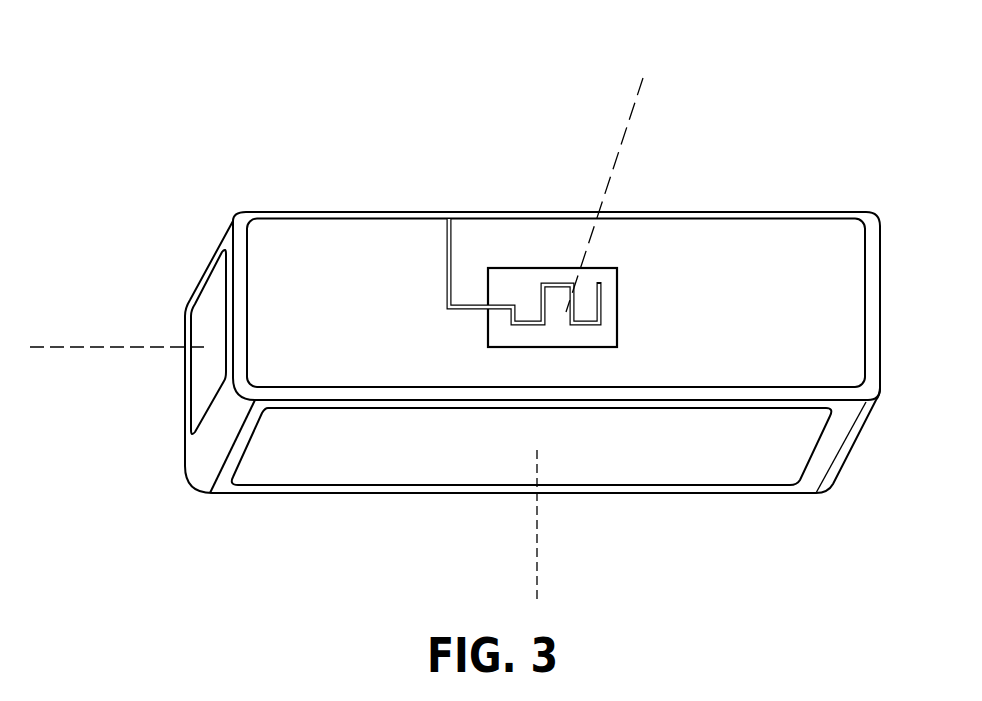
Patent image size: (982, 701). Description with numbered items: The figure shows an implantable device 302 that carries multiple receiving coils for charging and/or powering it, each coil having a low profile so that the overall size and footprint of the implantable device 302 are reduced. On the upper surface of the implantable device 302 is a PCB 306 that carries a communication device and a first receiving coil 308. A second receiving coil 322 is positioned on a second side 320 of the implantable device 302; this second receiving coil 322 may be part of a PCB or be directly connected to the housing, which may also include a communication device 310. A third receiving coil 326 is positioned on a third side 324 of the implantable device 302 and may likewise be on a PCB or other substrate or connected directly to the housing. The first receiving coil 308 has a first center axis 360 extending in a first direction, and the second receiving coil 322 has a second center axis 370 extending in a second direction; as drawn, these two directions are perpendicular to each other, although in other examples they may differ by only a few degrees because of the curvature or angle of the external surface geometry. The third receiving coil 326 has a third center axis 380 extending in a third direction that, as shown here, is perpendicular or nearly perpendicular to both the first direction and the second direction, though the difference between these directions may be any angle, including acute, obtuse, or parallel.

The implantable device 302 is at (847, 170).
The PCB 306 is at (645, 237).
The first receiving coil 308 is at (865, 317).
The communication device 310 is at (547, 275).
The second side 320 is at (427, 468).
The second receiving coil 322 is at (815, 448).
The third side 324 is at (202, 357).
The third receiving coil 326 is at (185, 333).
The first center axis 360 is at (643, 78).
The second center axis 370 is at (537, 552).
The third center axis 380 is at (78, 348).